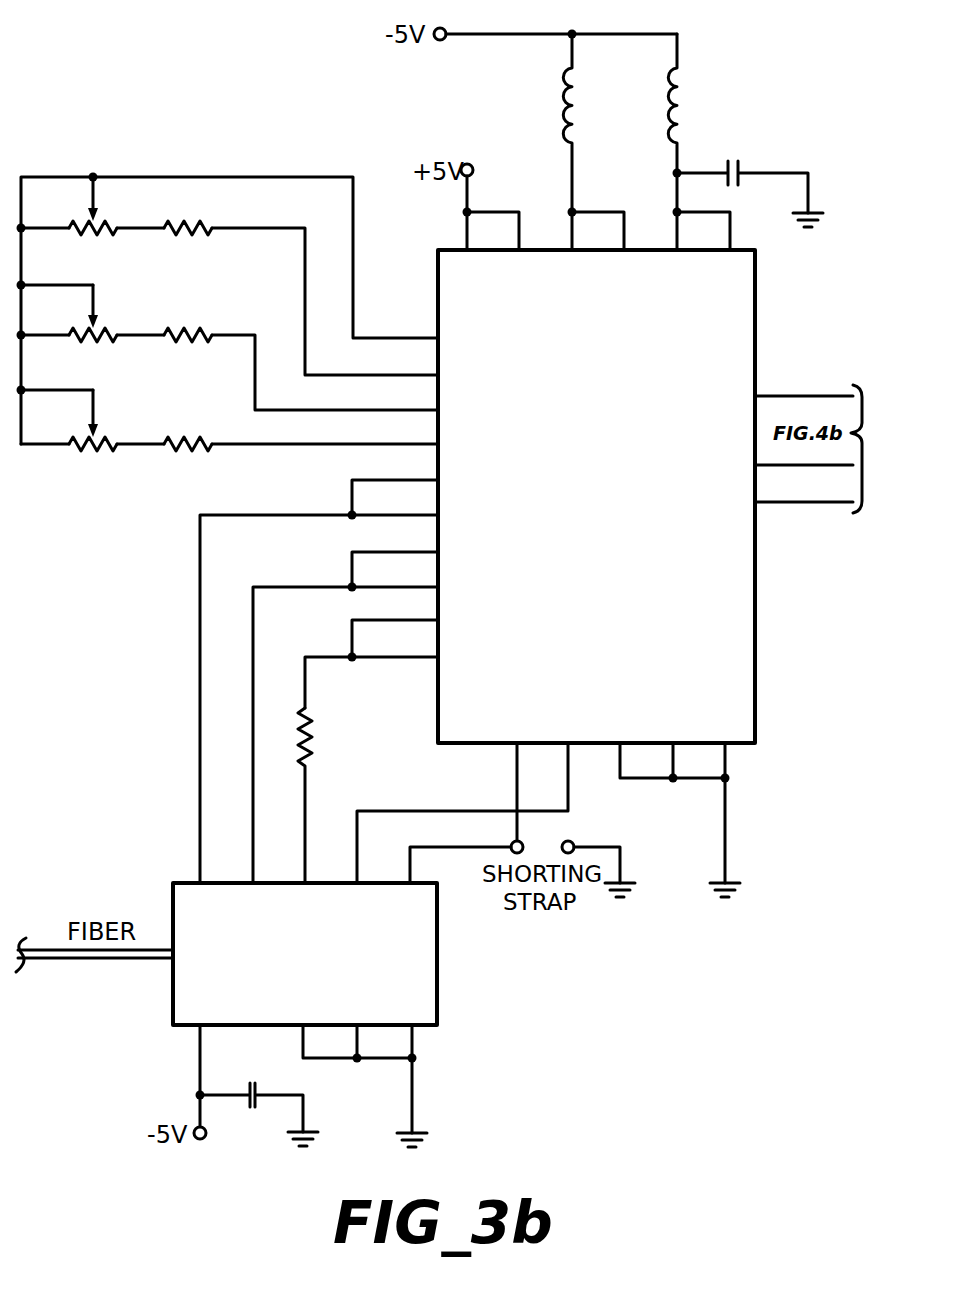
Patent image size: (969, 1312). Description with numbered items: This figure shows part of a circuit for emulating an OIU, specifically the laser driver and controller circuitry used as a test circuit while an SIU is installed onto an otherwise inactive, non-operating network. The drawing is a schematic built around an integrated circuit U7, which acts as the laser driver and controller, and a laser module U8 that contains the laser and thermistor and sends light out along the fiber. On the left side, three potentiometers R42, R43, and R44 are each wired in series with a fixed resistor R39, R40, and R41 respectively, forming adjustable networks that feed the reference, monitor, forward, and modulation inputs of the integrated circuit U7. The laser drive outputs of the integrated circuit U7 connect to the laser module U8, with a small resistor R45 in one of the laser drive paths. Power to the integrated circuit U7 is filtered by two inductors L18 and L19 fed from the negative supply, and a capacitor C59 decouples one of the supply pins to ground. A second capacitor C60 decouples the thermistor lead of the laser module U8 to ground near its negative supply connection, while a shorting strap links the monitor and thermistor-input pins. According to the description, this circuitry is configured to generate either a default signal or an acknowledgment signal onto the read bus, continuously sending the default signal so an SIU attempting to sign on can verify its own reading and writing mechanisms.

The resistor 10K R39 is at (210, 232).
The resistor 1000 R40 is at (210, 337).
The resistor 510 R41 is at (210, 441).
The potentiometer 10K R42 is at (110, 223).
The potentiometer 10K R43 is at (110, 329).
The potentiometer 10K R44 is at (110, 433).
The resistor 20 R45 is at (333, 795).
The inductor 1.2uH L18 is at (663, 142).
The inductor 1.2uH L19 is at (559, 142).
The capacitor 0.1 C59 is at (748, 183).
The capacitor 0.1 C60 is at (257, 1099).
The laser driver integrated circuit U7 is at (624, 496).
The laser module U8 is at (329, 954).